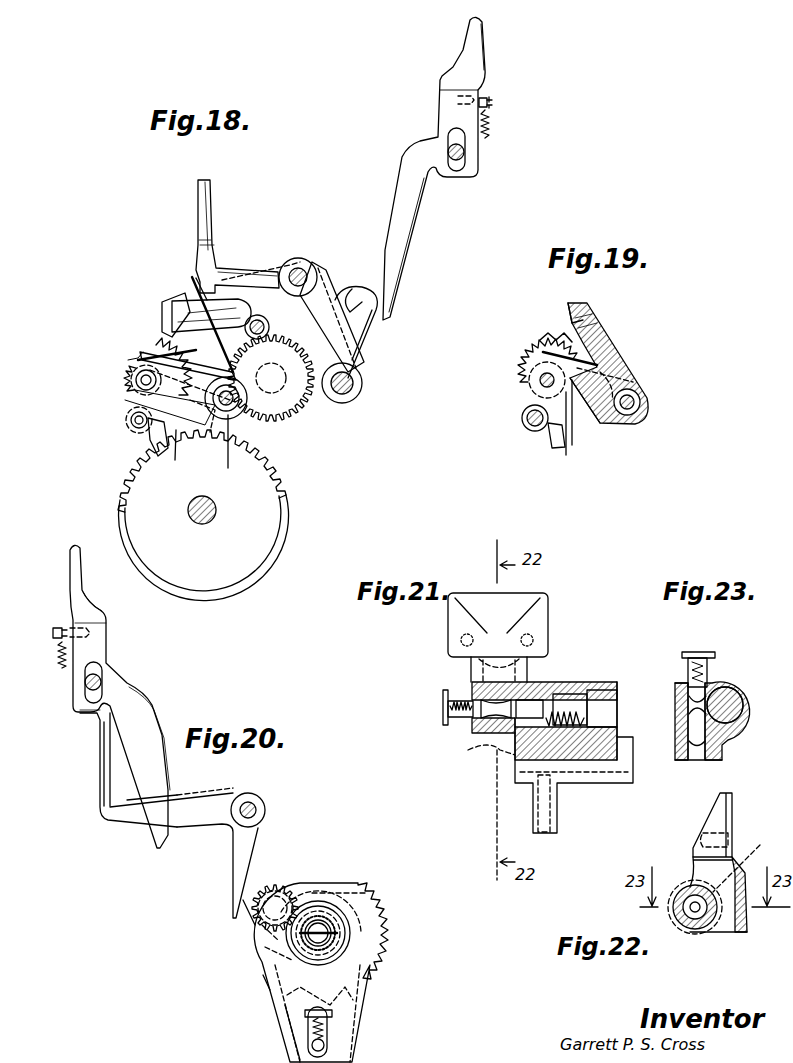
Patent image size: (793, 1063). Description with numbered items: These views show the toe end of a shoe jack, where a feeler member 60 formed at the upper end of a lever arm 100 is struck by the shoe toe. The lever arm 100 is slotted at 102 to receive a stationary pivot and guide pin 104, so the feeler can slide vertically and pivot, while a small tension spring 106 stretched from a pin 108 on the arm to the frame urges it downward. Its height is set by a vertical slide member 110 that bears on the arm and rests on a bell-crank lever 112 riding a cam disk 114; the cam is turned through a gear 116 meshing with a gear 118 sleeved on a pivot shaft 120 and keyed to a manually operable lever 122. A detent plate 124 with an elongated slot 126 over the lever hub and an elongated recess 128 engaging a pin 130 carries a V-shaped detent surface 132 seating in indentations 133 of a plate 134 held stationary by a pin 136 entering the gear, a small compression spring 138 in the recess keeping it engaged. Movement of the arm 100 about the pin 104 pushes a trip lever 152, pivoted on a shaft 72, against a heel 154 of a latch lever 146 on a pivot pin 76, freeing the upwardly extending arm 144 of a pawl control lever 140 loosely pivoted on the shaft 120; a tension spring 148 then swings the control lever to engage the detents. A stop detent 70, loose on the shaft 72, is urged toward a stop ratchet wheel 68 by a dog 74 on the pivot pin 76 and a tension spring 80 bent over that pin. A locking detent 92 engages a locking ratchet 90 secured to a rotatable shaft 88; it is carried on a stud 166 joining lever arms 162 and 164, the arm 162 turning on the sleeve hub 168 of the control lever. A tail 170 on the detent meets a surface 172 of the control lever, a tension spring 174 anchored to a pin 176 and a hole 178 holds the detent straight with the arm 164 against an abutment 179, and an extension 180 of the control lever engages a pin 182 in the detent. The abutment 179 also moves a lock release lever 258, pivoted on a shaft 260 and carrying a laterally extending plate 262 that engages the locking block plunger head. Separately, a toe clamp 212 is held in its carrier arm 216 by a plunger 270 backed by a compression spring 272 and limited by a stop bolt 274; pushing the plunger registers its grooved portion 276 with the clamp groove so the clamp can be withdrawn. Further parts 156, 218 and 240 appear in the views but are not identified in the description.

In FIG. 18, the feeler member 60 is at (471, 29).
In FIG. 20, the feeler member 60 is at (68, 555).
In FIG. 18, the stop ratchet wheel 68 is at (294, 410).
In FIG. 18, the stop detent 70 is at (327, 397).
In FIG. 18, the shaft 72 is at (354, 384).
In FIG. 18, the dog 74 is at (356, 366).
In FIG. 18, the pivot pin 76 is at (295, 268).
In FIG. 20, the pivot pin 76 is at (252, 802).
In FIG. 18, the tension spring 80 is at (302, 262).
In FIG. 18, the rotatable shaft 88 is at (194, 522).
In FIG. 18, the locking ratchet 90 is at (272, 474).
In FIG. 18, the locking detent 92 is at (150, 442).
In FIG. 19, the locking detent 92 is at (552, 447).
In FIG. 18, the lever arm 100 is at (480, 148).
In FIG. 20, the lever arm 100 is at (78, 708).
In FIG. 18, the slot 102 is at (464, 169).
In FIG. 20, the slot 102 is at (88, 672).
In FIG. 18, the pivot and guide pin 104 is at (464, 152).
In FIG. 20, the pivot and guide pin 104 is at (90, 685).
In FIG. 18, the tension spring 106 is at (491, 125).
In FIG. 20, the tension spring 106 is at (56, 655).
In FIG. 18, the pin 108 is at (494, 104).
In FIG. 20, the pin 108 is at (52, 634).
In FIG. 20, the vertical slide member 110 is at (100, 757).
In FIG. 20, the bell-crank lever 112 is at (232, 852).
In FIG. 20, the cam disk 114 is at (270, 884).
In FIG. 20, the gear 116 is at (250, 918).
In FIG. 20, the gear 118 is at (263, 952).
In FIG. 18, the pivot shaft 120 is at (241, 408).
In FIG. 19, the pivot shaft 120 is at (640, 401).
In FIG. 20, the pivot shaft 120 is at (352, 935).
In FIG. 20, the manually operable lever 122 is at (290, 1010).
In FIG. 20, the detent member 124 is at (290, 1000).
In FIG. 20, the elongated slot 126 is at (375, 898).
In FIG. 20, the elongated recess 128 is at (312, 1030).
In FIG. 20, the pin 130 is at (311, 1045).
In FIG. 20, the V-shaped detent surface 132 is at (350, 1000).
In FIG. 20, the indentations 133 is at (263, 977).
In FIG. 20, the plate 134 is at (349, 882).
In FIG. 20, the pin 136 is at (260, 932).
In FIG. 20, the compression spring 138 is at (328, 1030).
In FIG. 18, the pawl control lever 140 is at (211, 322).
In FIG. 19, the pawl control lever 140 is at (612, 342).
In FIG. 18, the upwardly extending arm 144 is at (178, 300).
In FIG. 19, the upwardly extending arm 144 is at (568, 306).
In FIG. 18, the latch lever 146 is at (265, 255).
In FIG. 18, the tension spring 148 is at (143, 400).
In FIG. 18, the trip lever 152 is at (372, 341).
In FIG. 18, the heel 154 is at (335, 297).
In FIG. 18, the flange 156 is at (205, 290).
In FIG. 18, the lever arm 162 is at (134, 383).
In FIG. 19, the lever arm 164 is at (603, 425).
In FIG. 18, the stud 166 is at (138, 373).
In FIG. 19, the stud 166 is at (528, 378).
In FIG. 18, the sleeve hub 168 is at (235, 449).
In FIG. 18, the tail 170 is at (192, 361).
In FIG. 19, the tail 170 is at (588, 415).
In FIG. 18, the surface 172 is at (192, 414).
In FIG. 19, the surface 172 is at (620, 376).
In FIG. 18, the tension spring 174 is at (136, 357).
In FIG. 19, the tension spring 174 is at (528, 360).
In FIG. 18, the pin 176 is at (158, 335).
In FIG. 19, the pin 176 is at (560, 340).
In FIG. 18, the hole 178 is at (131, 421).
In FIG. 19, the hole 178 is at (527, 418).
In FIG. 18, the abutment 179 is at (160, 350).
In FIG. 19, the abutment 179 is at (556, 346).
In FIG. 18, the extension 180 is at (185, 452).
In FIG. 19, the extension 180 is at (580, 431).
In FIG. 18, the pin 182 is at (133, 430).
In FIG. 19, the pin 182 is at (526, 428).
In FIG. 21, the toe clamp 212 is at (498, 637).
In FIG. 23, the toe clamp 212 is at (740, 700).
In FIG. 22, the toe clamp 212 is at (714, 822).
In FIG. 21, the carrier arm 216 is at (580, 760).
In FIG. 21, the bore 218 is at (480, 753).
In FIG. 21, the foot 240 is at (550, 818).
In FIG. 18, the lock release lever 258 is at (200, 246).
In FIG. 18, the shaft 260 is at (258, 314).
In FIG. 18, the laterally extending plate 262 is at (198, 200).
In FIG. 21, the plunger 270 is at (617, 672).
In FIG. 23, the plunger 270 is at (732, 752).
In FIG. 22, the plunger 270 is at (696, 872).
In FIG. 21, the compression spring 272 is at (560, 692).
In FIG. 21, the stop bolt 274 is at (443, 700).
In FIG. 23, the stop bolt 274 is at (715, 655).
In FIG. 22, the stop bolt 274 is at (745, 864).
In FIG. 21, the grooved portion 276 is at (497, 714).
In FIG. 23, the grooved portion 276 is at (695, 706).
In FIG. 22, the grooved portion 276 is at (690, 896).